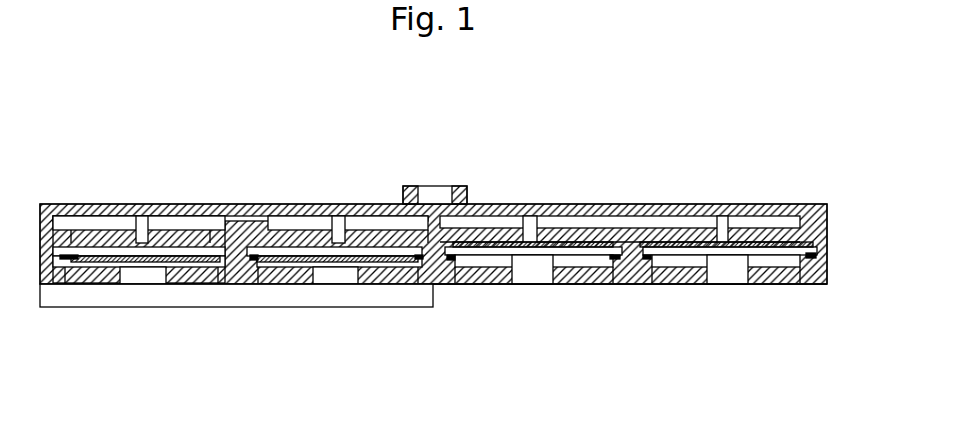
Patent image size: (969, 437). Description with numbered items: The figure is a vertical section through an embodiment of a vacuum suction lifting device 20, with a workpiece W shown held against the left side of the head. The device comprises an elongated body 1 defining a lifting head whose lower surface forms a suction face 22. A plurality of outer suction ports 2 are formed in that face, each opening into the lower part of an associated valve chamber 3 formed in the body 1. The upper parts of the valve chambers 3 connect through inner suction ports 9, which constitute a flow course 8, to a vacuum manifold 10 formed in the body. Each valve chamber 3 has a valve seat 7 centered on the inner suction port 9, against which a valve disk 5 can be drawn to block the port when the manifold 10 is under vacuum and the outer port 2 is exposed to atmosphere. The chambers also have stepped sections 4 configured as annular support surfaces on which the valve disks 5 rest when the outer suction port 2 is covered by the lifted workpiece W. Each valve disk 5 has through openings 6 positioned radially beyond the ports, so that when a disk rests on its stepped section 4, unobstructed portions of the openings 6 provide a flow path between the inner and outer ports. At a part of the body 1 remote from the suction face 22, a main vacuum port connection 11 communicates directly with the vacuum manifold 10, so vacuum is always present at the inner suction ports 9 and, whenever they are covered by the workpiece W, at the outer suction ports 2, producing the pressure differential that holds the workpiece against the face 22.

The body 1 is at (214, 248).
The outer suction ports 2 is at (140, 284).
The valve chambers 3 is at (164, 270).
The stepped sections 4 is at (58, 258).
The valve disk 5 is at (90, 270).
The through openings 6 is at (54, 255).
The valve seat 7 is at (80, 212).
The flow course 8 is at (135, 237).
The inner suction ports 9 is at (160, 224).
The vacuum manifold 10 is at (299, 250).
The main vacuum port connection 11 is at (455, 187).
The vacuum suction lifting device 20 is at (630, 111).
The suction face 22 is at (590, 284).
The workpiece W is at (388, 295).